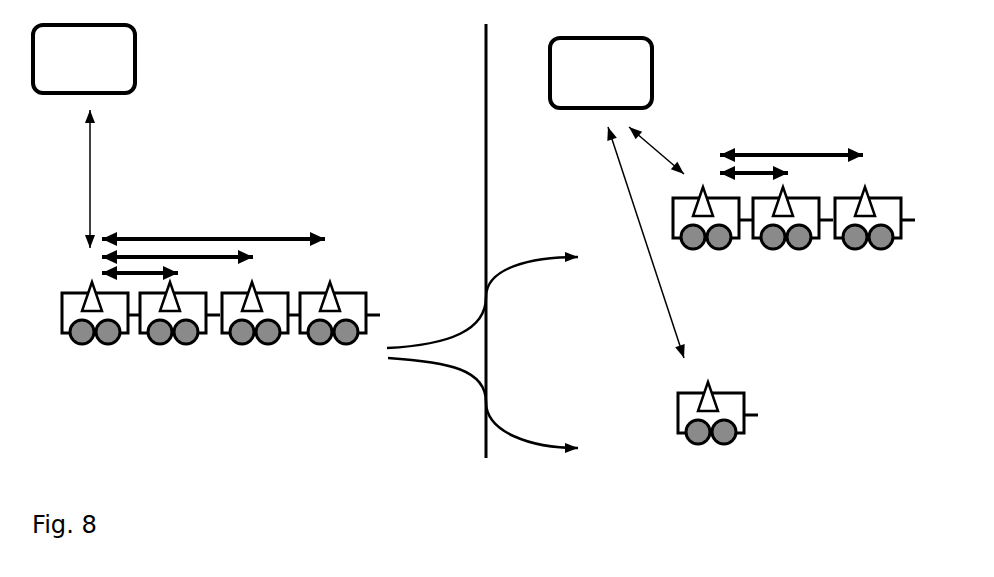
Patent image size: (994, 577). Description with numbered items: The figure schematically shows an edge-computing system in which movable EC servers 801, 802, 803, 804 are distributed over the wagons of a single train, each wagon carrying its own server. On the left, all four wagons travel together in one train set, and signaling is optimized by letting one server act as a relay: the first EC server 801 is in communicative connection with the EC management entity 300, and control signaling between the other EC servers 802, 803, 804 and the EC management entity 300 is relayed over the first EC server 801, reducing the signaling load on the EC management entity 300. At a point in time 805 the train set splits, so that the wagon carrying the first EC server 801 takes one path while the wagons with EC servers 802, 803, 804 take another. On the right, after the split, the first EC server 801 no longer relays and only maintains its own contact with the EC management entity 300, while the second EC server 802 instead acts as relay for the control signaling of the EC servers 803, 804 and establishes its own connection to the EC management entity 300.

The EC management entity 300 is at (342, 66).
The first EC server 801 is at (407, 386).
The second EC server 802 is at (446, 300).
The third EC server 803 is at (527, 300).
The fourth EC server 804 is at (607, 298).
The point in time of train split 805 is at (486, 264).